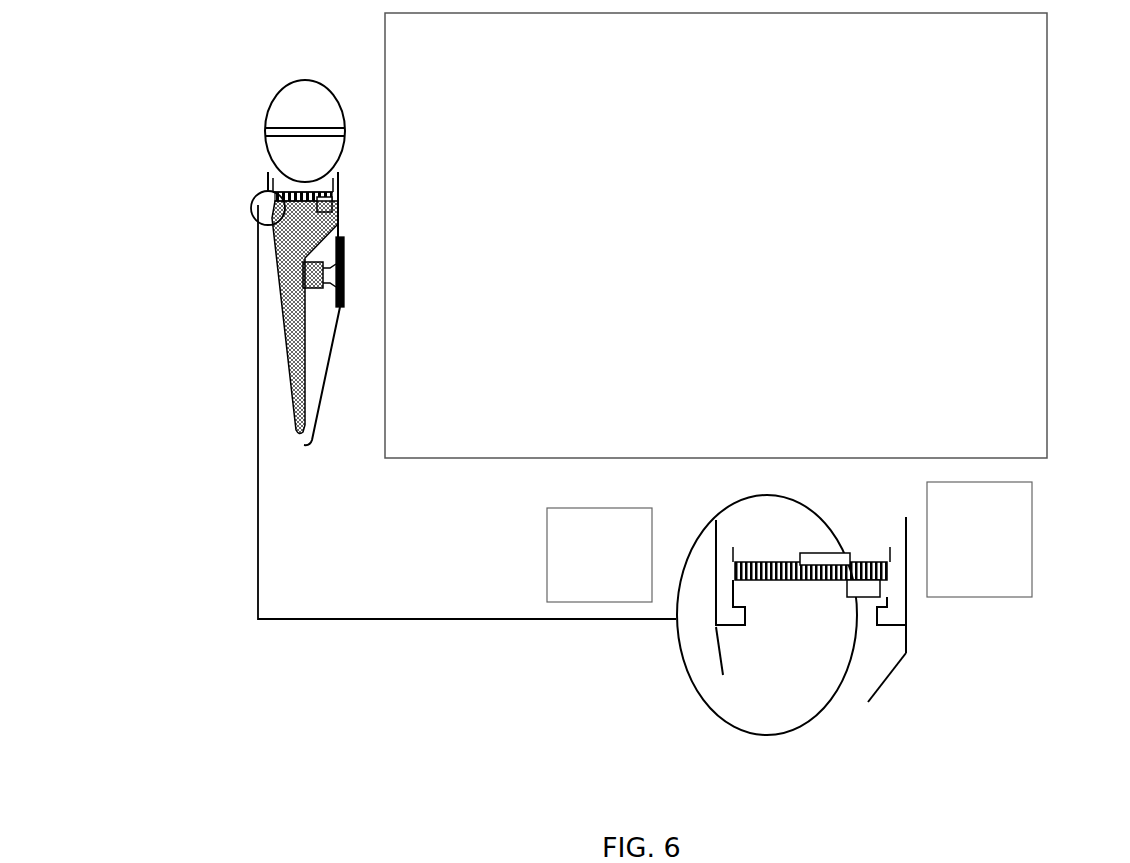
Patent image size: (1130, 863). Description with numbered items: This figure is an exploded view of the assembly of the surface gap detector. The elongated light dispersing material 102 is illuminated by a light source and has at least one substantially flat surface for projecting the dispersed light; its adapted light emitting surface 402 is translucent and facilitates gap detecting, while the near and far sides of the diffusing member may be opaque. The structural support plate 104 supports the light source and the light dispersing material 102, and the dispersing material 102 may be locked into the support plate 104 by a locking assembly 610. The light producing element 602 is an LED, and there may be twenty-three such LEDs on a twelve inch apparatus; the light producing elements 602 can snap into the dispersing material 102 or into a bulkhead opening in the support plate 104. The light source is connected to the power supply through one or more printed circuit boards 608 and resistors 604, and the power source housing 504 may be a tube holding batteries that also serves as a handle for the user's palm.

The power source housing 504 is at (266, 130).
The light dispersing material 102 is at (285, 348).
The structural support plate 104 is at (306, 348).
The light emitting surface 402 is at (300, 433).
The light producing element 602 is at (865, 585).
The resistor 604 is at (842, 552).
The printed circuit board 608 is at (882, 570).
The locking assembly 610 is at (730, 617).